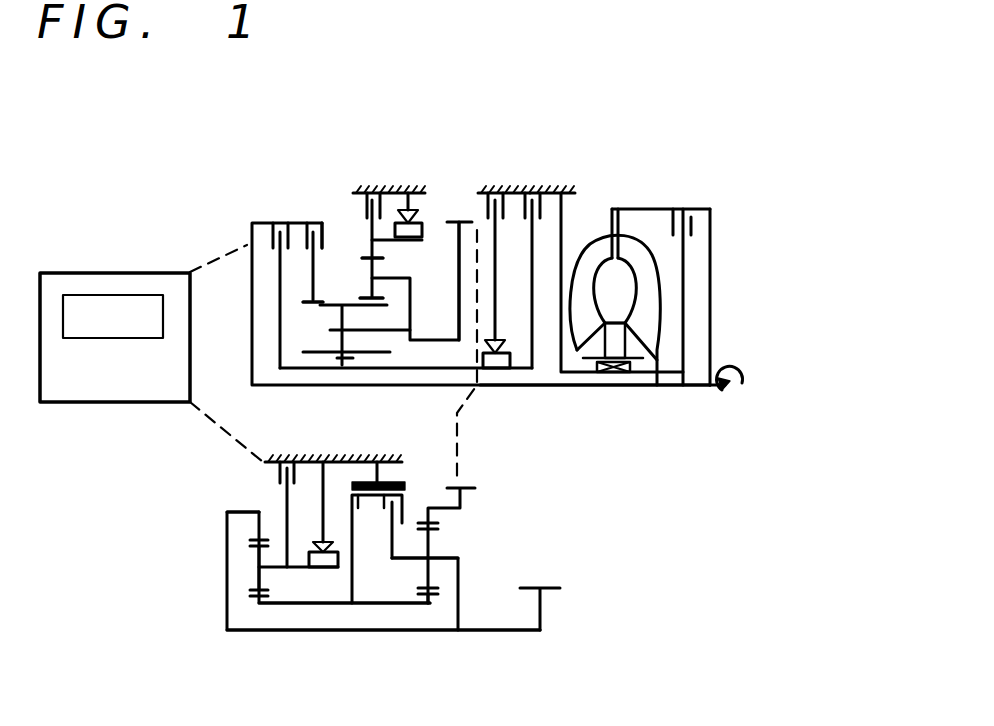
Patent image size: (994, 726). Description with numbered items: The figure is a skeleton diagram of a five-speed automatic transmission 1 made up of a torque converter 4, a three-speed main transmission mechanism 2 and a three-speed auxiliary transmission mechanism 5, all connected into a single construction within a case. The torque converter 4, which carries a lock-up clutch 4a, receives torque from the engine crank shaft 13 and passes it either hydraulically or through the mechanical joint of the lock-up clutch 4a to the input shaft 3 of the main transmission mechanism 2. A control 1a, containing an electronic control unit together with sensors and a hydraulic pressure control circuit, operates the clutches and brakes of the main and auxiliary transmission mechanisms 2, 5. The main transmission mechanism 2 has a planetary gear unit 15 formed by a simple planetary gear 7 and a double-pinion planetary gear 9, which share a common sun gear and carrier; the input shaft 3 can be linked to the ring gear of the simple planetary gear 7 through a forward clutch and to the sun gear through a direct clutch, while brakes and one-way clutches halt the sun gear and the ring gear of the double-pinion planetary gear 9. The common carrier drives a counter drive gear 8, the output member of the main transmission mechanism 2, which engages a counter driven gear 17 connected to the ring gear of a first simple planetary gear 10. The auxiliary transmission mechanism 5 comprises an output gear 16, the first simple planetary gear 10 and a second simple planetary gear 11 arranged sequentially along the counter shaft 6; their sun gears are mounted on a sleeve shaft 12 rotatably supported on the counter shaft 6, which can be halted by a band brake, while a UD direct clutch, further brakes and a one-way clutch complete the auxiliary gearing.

The automatic transmission 1 is at (572, 143).
The control 1a is at (98, 273).
The main transmission mechanism 2 is at (222, 242).
The input shaft 3 is at (550, 387).
The torque converter 4 is at (647, 203).
The lock-up clutch 4a is at (693, 220).
The auxiliary transmission mechanism 5 is at (171, 506).
The counter shaft 6 is at (348, 633).
The simple planetary gear 7 is at (365, 245).
The counter drive gear 8 is at (455, 222).
The double-pinion planetary gear 9 is at (345, 248).
The first simple planetary gear 10 is at (455, 537).
The second simple planetary gear 11 is at (243, 512).
The sleeve shaft 12 is at (320, 607).
The engine crank shaft 13 is at (717, 387).
The planetary gear unit 15 is at (333, 93).
The output gear 16 is at (552, 580).
The counter driven gear 17 is at (473, 484).